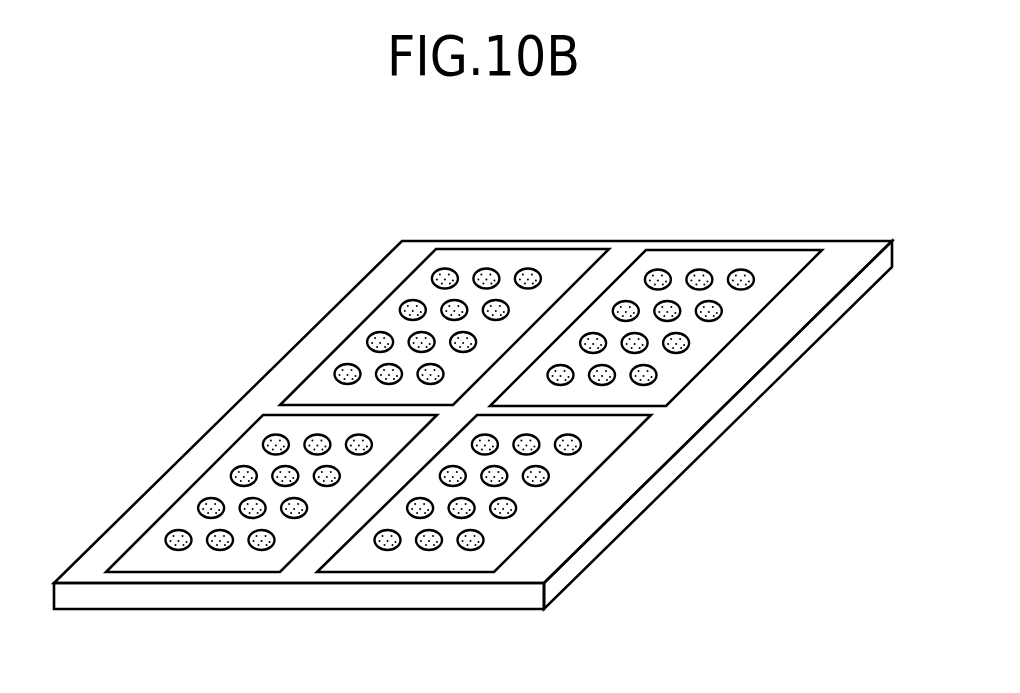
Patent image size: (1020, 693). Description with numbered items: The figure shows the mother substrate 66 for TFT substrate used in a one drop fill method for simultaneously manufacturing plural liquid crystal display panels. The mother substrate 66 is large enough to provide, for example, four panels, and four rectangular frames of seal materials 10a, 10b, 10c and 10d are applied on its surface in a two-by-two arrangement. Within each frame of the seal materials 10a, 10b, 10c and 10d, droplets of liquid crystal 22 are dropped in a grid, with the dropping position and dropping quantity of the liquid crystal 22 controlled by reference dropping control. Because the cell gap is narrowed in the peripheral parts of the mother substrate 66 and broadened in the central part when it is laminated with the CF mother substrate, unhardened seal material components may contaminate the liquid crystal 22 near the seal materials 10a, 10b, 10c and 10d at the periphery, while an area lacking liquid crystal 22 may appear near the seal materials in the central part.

The mother substrate for TFT substrate 66 is at (853, 248).
The seal material 10a is at (382, 303).
The seal material 10b is at (613, 275).
The seal material 10c is at (197, 480).
The seal material 10d is at (350, 537).
The liquid crystal 22 is at (488, 272).